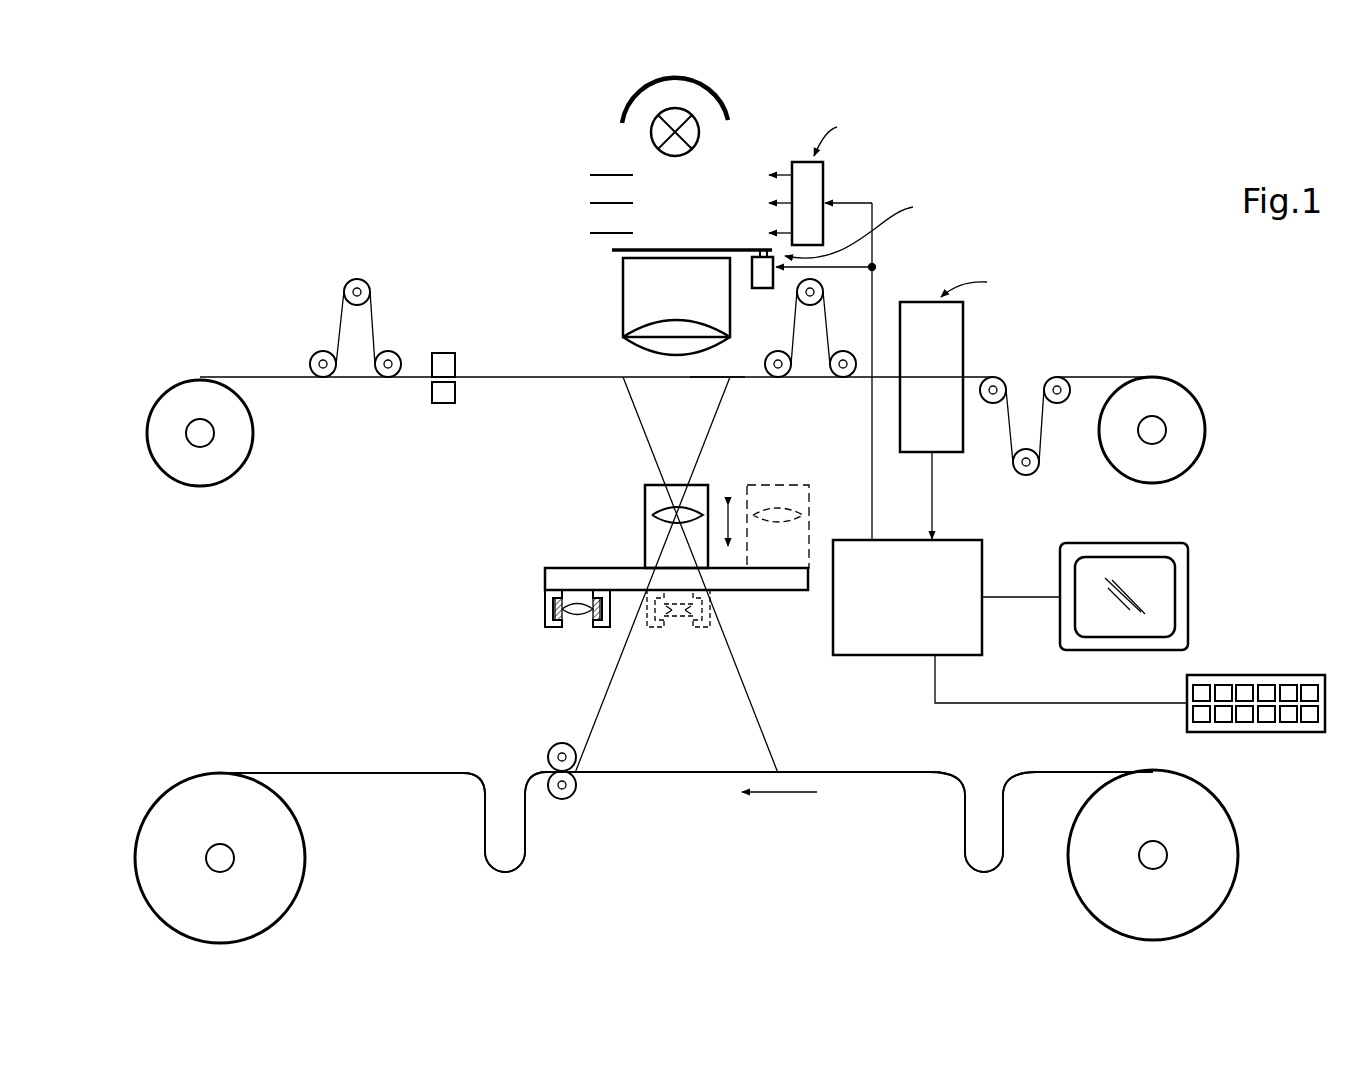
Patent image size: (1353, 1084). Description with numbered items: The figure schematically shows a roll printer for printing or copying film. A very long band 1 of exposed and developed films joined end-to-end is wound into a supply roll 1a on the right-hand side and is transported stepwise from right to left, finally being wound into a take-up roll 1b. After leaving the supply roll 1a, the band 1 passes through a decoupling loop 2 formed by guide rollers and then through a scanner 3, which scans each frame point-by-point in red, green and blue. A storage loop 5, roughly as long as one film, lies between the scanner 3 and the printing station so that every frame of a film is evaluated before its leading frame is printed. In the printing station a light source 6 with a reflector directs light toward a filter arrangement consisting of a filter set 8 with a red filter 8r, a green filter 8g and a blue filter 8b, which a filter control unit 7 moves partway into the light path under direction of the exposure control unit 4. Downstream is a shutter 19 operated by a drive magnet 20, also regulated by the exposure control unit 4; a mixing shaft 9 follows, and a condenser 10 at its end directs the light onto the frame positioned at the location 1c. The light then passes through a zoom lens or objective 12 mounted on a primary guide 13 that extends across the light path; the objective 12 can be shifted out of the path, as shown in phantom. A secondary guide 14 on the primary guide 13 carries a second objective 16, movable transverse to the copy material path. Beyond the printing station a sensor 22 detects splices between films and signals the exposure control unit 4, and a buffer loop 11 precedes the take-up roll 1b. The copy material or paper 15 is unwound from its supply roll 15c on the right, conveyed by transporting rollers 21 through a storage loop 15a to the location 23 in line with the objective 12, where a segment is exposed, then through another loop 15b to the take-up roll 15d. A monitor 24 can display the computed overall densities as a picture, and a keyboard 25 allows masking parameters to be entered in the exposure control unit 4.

The band 1 is at (1100, 368).
The supply roll 1a is at (1203, 423).
The take-up roll 1b is at (248, 460).
The printing station location 1c is at (697, 376).
The decoupling loop 2 is at (1042, 428).
The scanner 3 is at (965, 338).
The exposure control unit 4 is at (984, 566).
The storage loop 5 is at (830, 323).
The light source 6 is at (651, 138).
The filter control unit 7 is at (800, 160).
The filter set 8 is at (576, 187).
The red filter 8r is at (718, 175).
The green filter 8g is at (718, 203).
The blue filter 8b is at (718, 233).
The mixing shaft 9 is at (625, 285).
The condenser 10 is at (633, 347).
The loop 11 is at (341, 312).
The zoom lens or objective 12 is at (645, 530).
The primary guide 13 is at (757, 592).
The secondary guide 14 is at (545, 610).
The copy material or paper 15 is at (863, 750).
The storage loop 15a is at (962, 825).
The loop 15b is at (522, 848).
The supply roll 15c is at (1238, 840).
The take-up roll 15d is at (298, 898).
The second objective 16 is at (577, 621).
The shutter 19 is at (612, 248).
The drive magnet 20 is at (763, 291).
The transporting rollers 21 is at (558, 800).
The sensor 22 is at (428, 393).
The printing station location 23 is at (657, 775).
The monitor 24 is at (1185, 578).
The keyboard 25 is at (1275, 677).